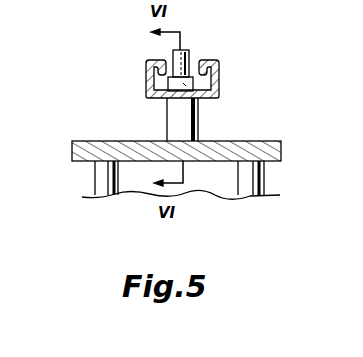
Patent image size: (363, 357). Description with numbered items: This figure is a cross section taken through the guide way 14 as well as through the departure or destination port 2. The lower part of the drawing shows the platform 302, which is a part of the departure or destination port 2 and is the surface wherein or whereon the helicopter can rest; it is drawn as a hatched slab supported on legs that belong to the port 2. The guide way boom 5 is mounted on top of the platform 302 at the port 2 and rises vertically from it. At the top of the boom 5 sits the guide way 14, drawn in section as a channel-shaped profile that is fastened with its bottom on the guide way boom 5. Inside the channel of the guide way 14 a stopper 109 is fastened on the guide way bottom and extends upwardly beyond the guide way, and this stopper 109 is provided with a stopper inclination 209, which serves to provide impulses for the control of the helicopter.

The departure or destination port 2 is at (80, 150).
The guide way boom 5 is at (172, 128).
The guide way 14 is at (219, 94).
The stopper 109 is at (186, 51).
The stopper inclination 209 is at (186, 84).
The platform 302 is at (281, 148).